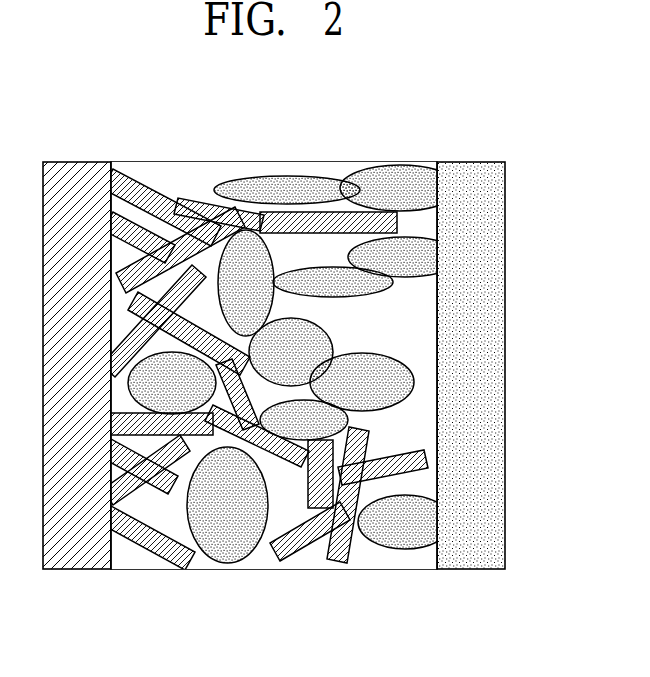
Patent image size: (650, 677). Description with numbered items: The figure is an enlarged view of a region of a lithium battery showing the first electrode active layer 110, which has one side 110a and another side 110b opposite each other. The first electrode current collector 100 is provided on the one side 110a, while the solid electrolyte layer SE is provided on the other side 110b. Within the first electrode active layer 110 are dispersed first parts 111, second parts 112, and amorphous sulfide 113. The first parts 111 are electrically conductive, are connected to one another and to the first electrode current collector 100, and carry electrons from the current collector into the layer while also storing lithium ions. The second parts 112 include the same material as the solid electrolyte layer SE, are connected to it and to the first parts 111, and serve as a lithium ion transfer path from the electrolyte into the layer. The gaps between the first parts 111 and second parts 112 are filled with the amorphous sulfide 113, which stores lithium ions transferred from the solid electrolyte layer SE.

The first electrode current collector 100 is at (75, 569).
The first electrode active layer 110 is at (279, 365).
The one side of the first electrode active layer 110a is at (111, 198).
The another side of the first electrode active layer 110b is at (438, 222).
The first parts 111 is at (143, 195).
The second parts 112 is at (383, 173).
The amorphous sulfide 113 is at (205, 175).
The solid electrolyte layer SE is at (470, 569).